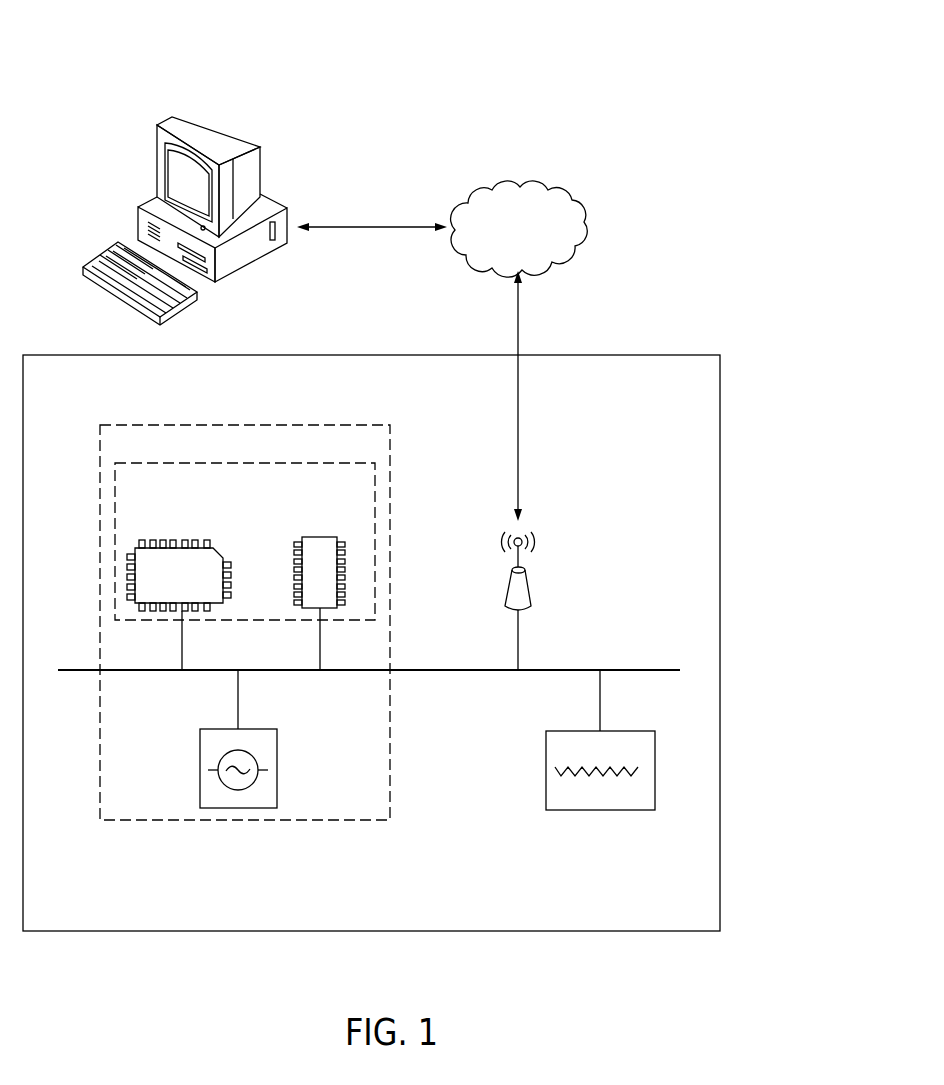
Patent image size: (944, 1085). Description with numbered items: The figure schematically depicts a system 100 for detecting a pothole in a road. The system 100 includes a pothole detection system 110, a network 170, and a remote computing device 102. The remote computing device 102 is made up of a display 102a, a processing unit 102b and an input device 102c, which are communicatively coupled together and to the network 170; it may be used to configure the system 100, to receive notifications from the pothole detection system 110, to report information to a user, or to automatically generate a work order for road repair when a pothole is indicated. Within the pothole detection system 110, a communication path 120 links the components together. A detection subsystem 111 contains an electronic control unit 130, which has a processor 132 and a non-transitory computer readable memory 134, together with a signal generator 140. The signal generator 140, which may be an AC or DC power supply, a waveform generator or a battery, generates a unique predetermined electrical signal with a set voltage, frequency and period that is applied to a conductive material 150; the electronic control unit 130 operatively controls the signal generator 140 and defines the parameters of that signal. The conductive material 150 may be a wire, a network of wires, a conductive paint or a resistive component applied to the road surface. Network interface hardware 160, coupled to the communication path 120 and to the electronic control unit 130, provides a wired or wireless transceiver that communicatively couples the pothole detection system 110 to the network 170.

The system for detecting a pothole in a road 100 is at (732, 56).
The remote computing device 102 is at (217, 223).
The display 102a is at (157, 135).
The processing unit 102b is at (238, 263).
The input device 102c is at (175, 307).
The pothole detection system 110 is at (680, 355).
The detection subsystem 111 is at (390, 458).
The communication path 120 is at (73, 670).
The electronic control unit 130 is at (375, 601).
The processor 132 is at (215, 548).
The non-transitory computer readable memory 134 is at (317, 537).
The signal generator 140 is at (240, 808).
The conductive material 150 is at (590, 810).
The network interface hardware 160 is at (512, 578).
The network 170 is at (583, 226).